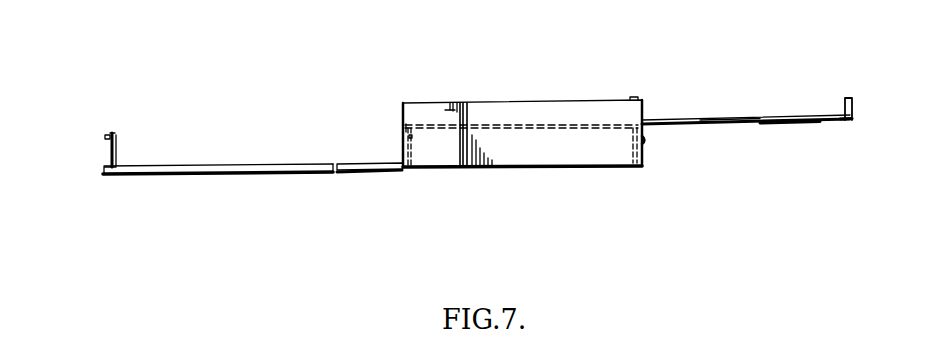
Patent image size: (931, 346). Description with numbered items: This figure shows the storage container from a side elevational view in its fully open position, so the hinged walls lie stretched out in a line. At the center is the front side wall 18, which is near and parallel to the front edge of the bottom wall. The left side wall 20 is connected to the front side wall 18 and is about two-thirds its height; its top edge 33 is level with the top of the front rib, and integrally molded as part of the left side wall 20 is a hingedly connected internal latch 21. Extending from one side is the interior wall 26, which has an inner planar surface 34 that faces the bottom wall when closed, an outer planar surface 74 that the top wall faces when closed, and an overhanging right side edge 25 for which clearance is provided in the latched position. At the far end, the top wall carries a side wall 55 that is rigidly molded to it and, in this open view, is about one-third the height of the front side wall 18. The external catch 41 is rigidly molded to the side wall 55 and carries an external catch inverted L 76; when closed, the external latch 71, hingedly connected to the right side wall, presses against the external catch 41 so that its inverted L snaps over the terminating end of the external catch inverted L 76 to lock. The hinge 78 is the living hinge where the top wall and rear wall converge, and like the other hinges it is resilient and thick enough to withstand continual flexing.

The front side wall 18 is at (503, 108).
The top edge 33 is at (428, 127).
The inner planar surface 34 is at (717, 117).
The interior wall 26 is at (745, 125).
The outer planar surface 74 is at (800, 123).
The right side edge 25 is at (853, 118).
The external latch 71 is at (645, 139).
The internal latch 21 is at (403, 130).
The hinge 78 is at (337, 170).
The left side wall 20 is at (373, 170).
The external catch 41 is at (113, 133).
The side wall 55 is at (116, 146).
The external catch inverted L 76 is at (105, 137).